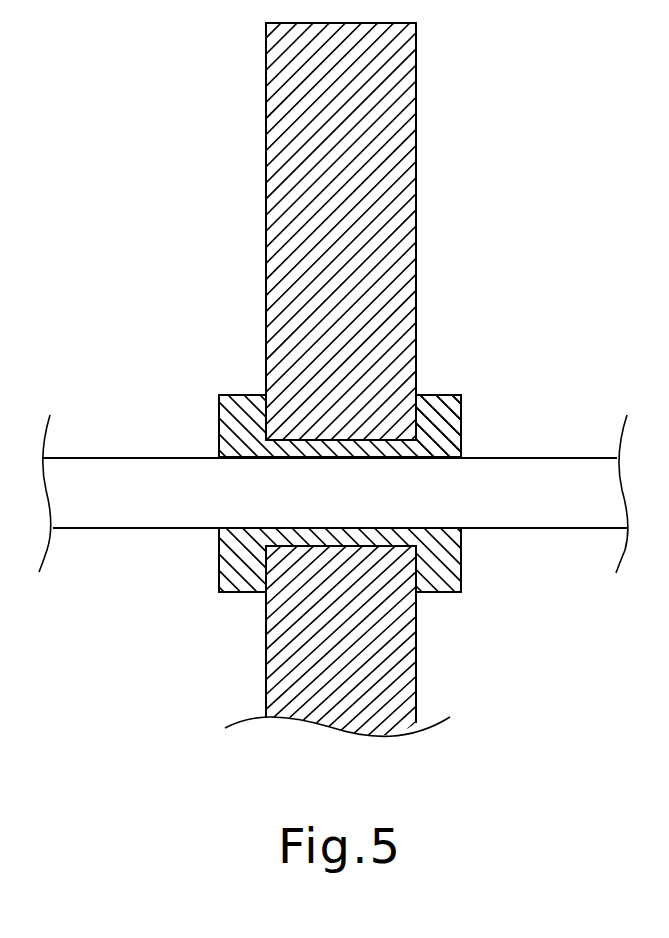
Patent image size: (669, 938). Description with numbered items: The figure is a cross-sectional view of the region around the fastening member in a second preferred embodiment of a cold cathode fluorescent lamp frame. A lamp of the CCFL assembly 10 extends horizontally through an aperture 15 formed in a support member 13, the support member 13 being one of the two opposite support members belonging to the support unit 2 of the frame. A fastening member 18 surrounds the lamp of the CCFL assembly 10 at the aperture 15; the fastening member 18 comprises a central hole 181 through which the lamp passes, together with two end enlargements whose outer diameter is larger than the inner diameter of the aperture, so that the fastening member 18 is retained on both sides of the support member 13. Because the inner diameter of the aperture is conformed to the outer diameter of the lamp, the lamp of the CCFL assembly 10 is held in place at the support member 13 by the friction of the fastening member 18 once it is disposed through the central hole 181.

The support unit 2 is at (334, 469).
The CCFL assembly 10 is at (142, 457).
The support member 13 is at (292, 238).
The aperture 15 is at (308, 440).
The fastening member 18 is at (334, 469).
The central hole 181 is at (430, 443).